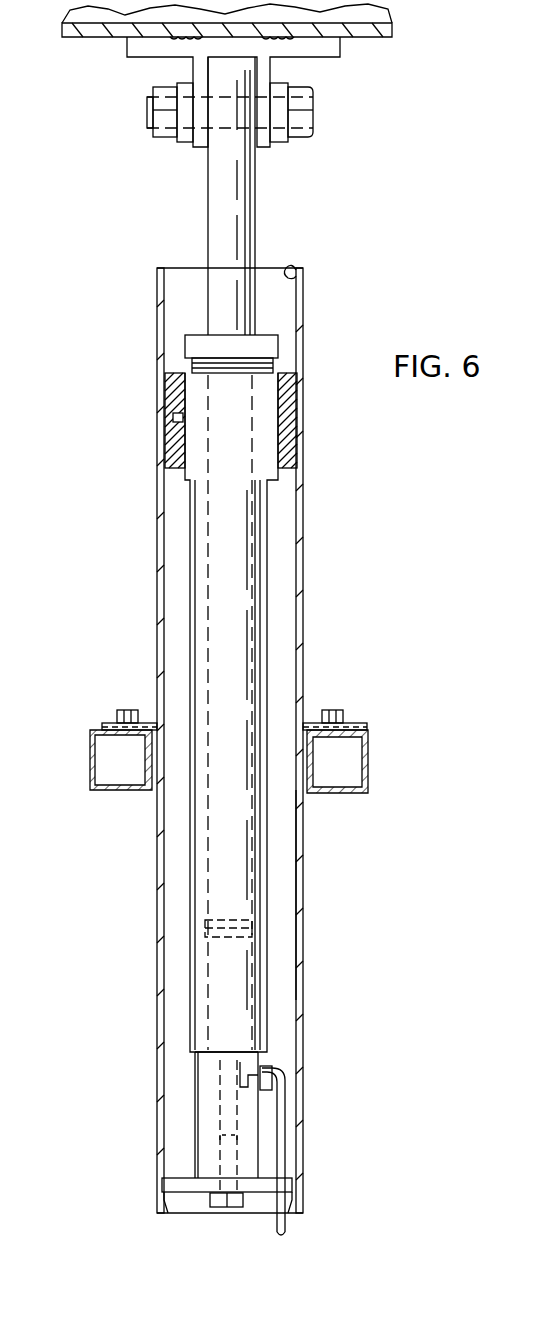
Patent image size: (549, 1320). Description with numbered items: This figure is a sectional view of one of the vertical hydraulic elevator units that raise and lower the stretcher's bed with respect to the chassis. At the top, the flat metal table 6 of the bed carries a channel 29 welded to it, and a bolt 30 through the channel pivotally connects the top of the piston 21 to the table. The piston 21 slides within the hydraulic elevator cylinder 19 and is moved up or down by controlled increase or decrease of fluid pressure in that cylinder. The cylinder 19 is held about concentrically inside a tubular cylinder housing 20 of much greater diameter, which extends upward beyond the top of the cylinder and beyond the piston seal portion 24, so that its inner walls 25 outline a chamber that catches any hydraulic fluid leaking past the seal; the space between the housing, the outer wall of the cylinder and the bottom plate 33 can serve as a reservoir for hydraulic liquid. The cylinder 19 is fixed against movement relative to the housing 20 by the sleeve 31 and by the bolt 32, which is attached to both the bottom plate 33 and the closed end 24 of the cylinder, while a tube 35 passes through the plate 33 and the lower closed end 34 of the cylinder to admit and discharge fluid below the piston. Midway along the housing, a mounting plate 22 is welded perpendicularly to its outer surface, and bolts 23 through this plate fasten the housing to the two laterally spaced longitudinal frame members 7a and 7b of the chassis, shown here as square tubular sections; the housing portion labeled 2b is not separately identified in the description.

The flat table 6 is at (378, 37).
The channel 29 is at (270, 75).
The bolt 30 is at (307, 103).
The piston 21 is at (250, 228).
The inner walls 25 is at (292, 268).
The piston seal portion 24 is at (268, 345).
The sleeve 31 is at (292, 417).
The hydraulic elevator cylinder 19 is at (266, 538).
The hydraulic cylinder housing 20 is at (300, 644).
The bolts 23 is at (127, 710).
The mounting plate 22 is at (360, 724).
The longitudinally extending member 7a is at (90, 760).
The longitudinally extending member 7b is at (370, 765).
The cylinder housing 2b is at (297, 848).
The closed end of the cylinder 34 is at (262, 1062).
The tube 35 is at (285, 1100).
The bolt 32 is at (238, 1158).
The bottom plate 33 is at (255, 1190).